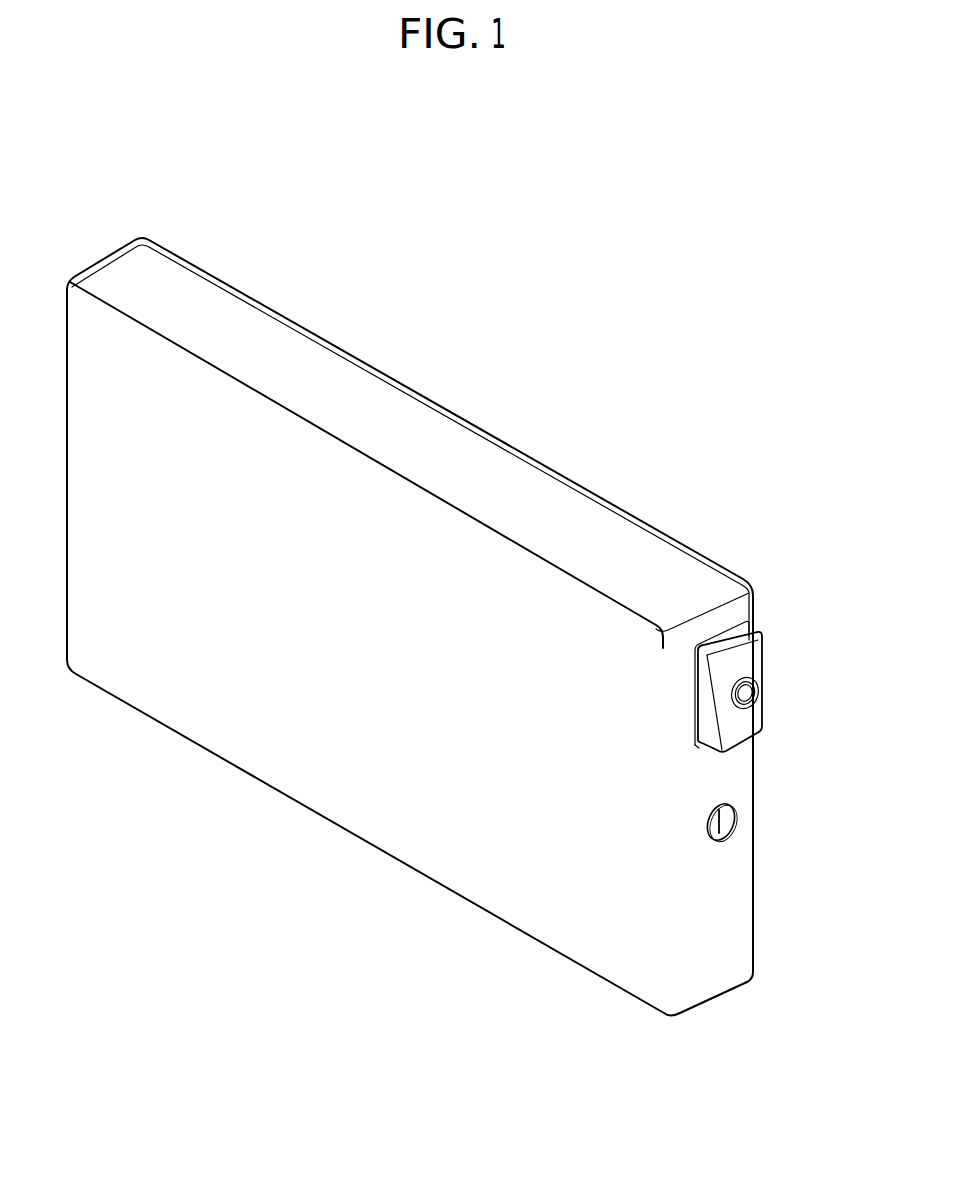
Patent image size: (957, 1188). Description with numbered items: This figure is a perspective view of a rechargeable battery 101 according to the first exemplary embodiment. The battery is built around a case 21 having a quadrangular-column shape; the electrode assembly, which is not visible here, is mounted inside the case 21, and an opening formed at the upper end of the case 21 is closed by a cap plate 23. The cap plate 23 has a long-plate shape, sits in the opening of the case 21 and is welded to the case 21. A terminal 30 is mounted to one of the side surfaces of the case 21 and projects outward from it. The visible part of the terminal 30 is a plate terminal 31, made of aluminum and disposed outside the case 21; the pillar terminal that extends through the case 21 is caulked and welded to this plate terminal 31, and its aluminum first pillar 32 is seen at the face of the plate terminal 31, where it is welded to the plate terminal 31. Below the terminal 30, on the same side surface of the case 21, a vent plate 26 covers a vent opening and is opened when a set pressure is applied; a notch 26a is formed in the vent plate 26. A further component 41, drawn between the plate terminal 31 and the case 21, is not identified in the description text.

The rechargeable battery 101 is at (527, 367).
The case 21 is at (405, 805).
The cap plate 23 is at (589, 522).
The vent plate 26 is at (725, 815).
The notch 26a is at (738, 823).
The terminal 30 is at (776, 653).
The plate terminal 31 is at (755, 720).
The first pillar 32 is at (745, 694).
The insulating plate 41 is at (724, 632).